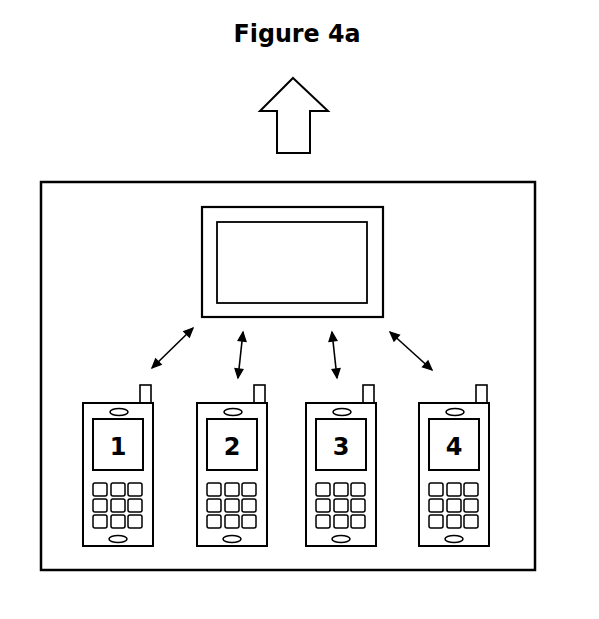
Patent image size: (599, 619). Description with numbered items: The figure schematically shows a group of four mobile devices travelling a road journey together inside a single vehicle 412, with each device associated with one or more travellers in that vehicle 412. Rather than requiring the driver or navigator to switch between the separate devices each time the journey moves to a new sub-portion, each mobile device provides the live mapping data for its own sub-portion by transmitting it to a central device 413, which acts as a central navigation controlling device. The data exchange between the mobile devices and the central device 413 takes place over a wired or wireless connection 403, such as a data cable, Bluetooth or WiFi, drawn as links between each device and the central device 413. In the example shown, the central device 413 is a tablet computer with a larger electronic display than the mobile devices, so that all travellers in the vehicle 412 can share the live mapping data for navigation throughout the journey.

The vehicle 412 is at (288, 376).
The central device 413 is at (292, 262).
The wired or wireless connection 403 is at (242, 353).